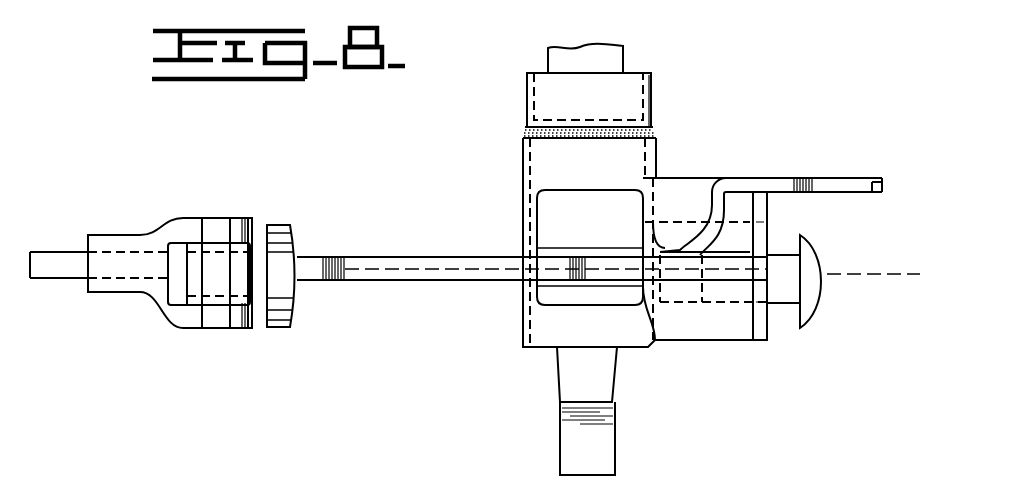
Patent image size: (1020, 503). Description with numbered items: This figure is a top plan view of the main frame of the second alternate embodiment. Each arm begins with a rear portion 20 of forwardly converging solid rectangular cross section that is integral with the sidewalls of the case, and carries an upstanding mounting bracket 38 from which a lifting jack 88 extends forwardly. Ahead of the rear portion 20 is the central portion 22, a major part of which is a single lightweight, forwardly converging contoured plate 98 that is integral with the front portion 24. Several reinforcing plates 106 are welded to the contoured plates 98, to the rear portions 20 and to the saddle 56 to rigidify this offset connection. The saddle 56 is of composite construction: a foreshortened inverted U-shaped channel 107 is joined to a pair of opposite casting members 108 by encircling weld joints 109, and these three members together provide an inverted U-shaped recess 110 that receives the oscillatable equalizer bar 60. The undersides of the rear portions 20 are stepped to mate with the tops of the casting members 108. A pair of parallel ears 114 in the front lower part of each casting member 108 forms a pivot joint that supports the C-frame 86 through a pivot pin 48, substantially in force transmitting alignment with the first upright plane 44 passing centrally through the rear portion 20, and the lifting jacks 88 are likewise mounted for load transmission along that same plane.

The rear portion 20 is at (68, 251).
The mounting bracket 38 is at (160, 317).
The lifting jack 88 is at (295, 240).
The first upright plane 44 is at (390, 263).
The central portion 22 is at (618, 245).
The equalizer bar 60 is at (556, 62).
The inverted U-shaped channel 107 is at (543, 90).
The saddle 56 is at (652, 98).
The encircling weld joint 109 is at (528, 132).
The casting member 108 is at (530, 178).
The inverted U-shaped channel or recess 110 is at (532, 337).
The pivot pin 48 is at (703, 327).
The front portion 24 is at (858, 172).
The contoured plate 98 is at (870, 193).
The reinforcing plate 106 is at (712, 213).
The ear 114 is at (773, 230).
The C-frame 86 is at (808, 293).